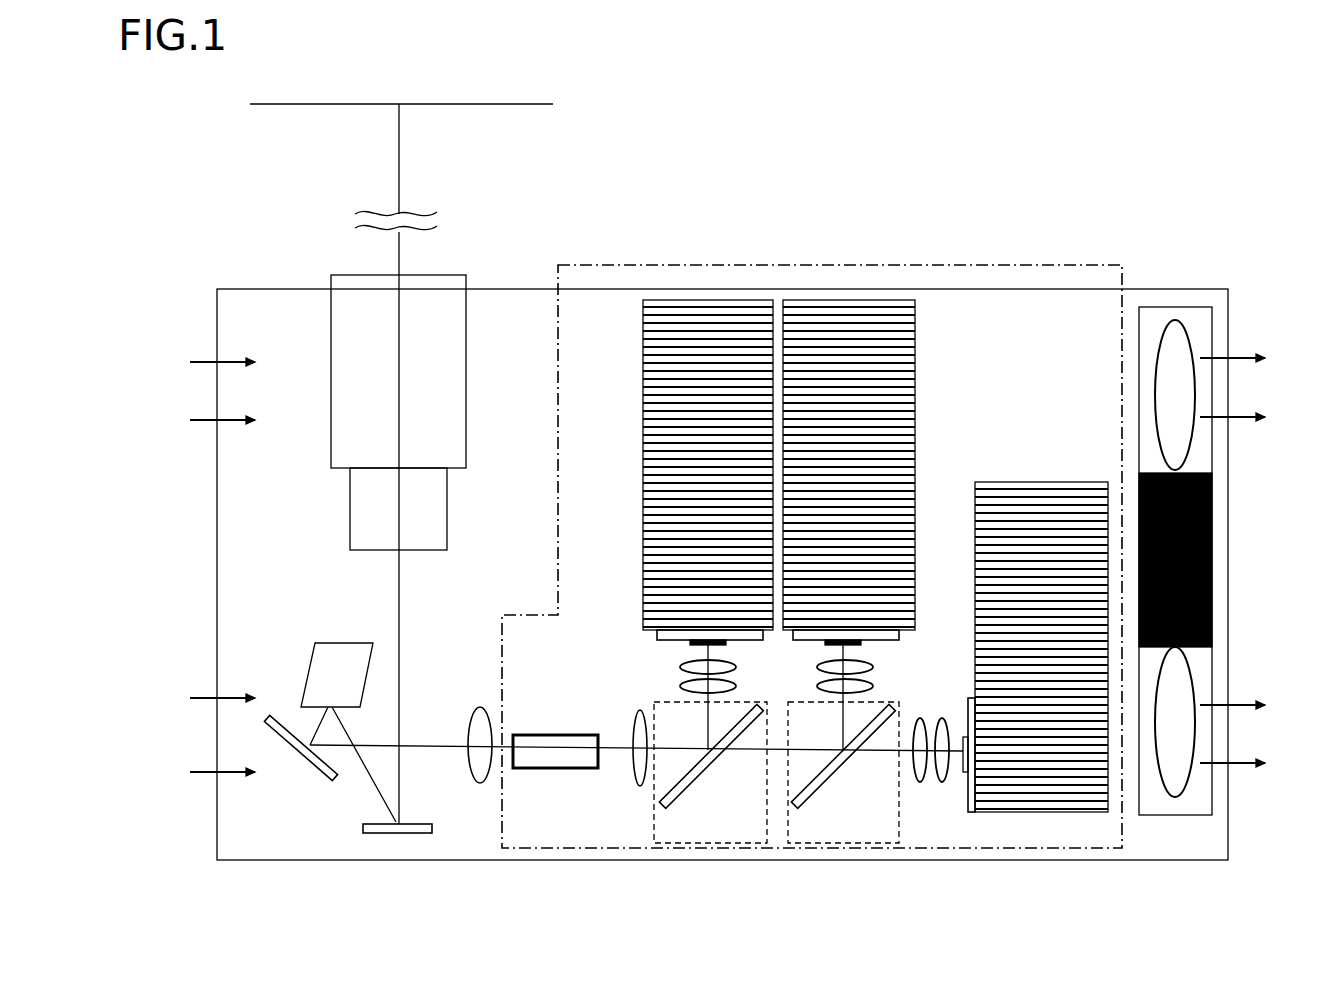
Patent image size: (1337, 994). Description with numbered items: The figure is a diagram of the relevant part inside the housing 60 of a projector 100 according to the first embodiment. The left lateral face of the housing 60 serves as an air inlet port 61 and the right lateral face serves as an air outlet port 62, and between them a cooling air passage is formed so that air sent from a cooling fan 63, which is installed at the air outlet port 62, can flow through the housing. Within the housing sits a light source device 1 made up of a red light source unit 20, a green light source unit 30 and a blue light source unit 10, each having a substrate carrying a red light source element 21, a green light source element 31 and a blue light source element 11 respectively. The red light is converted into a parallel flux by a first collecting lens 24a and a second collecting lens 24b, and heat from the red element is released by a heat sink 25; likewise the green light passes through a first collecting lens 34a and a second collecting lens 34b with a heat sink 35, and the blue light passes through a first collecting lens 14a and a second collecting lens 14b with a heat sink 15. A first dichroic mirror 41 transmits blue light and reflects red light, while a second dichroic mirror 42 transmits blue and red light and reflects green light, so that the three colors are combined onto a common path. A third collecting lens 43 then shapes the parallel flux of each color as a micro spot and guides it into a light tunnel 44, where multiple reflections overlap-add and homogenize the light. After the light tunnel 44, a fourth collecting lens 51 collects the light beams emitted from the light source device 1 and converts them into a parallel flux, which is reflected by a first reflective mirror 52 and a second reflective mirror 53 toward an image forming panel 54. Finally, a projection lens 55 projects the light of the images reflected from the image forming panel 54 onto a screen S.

The projector 100 is at (653, 172).
The screen S is at (513, 106).
The light source device 1 is at (948, 265).
The blue light source unit 10 is at (1011, 478).
The blue light source element 11 is at (965, 798).
The first collecting lens 14a is at (940, 786).
The second collecting lens 14b is at (913, 769).
The heat sink 15 is at (1063, 482).
The red light source unit 20 is at (844, 298).
The red light source element 21 is at (911, 642).
The first collecting lens 24a is at (877, 665).
The second collecting lens 24b is at (877, 686).
The heat sink 25 is at (915, 384).
The green light source unit 30 is at (712, 298).
The green light source element 31 is at (656, 647).
The first collecting lens 34a is at (740, 665).
The second collecting lens 34b is at (740, 686).
The heat sink 35 is at (643, 393).
The first dichroic mirror 41 is at (828, 778).
The second dichroic mirror 42 is at (693, 778).
The third collecting lens 43 is at (640, 787).
The light tunnel 44 is at (560, 769).
The fourth collecting lens 51 is at (480, 784).
The first reflective mirror 52 is at (305, 756).
The second reflective mirror 53 is at (330, 643).
The image forming panel 54 is at (404, 834).
The projection lens 55 is at (466, 352).
The housing 60 is at (1168, 861).
The air inlet port 61 is at (217, 490).
The air outlet port 62 is at (1230, 553).
The cooling fan 63 is at (1170, 307).